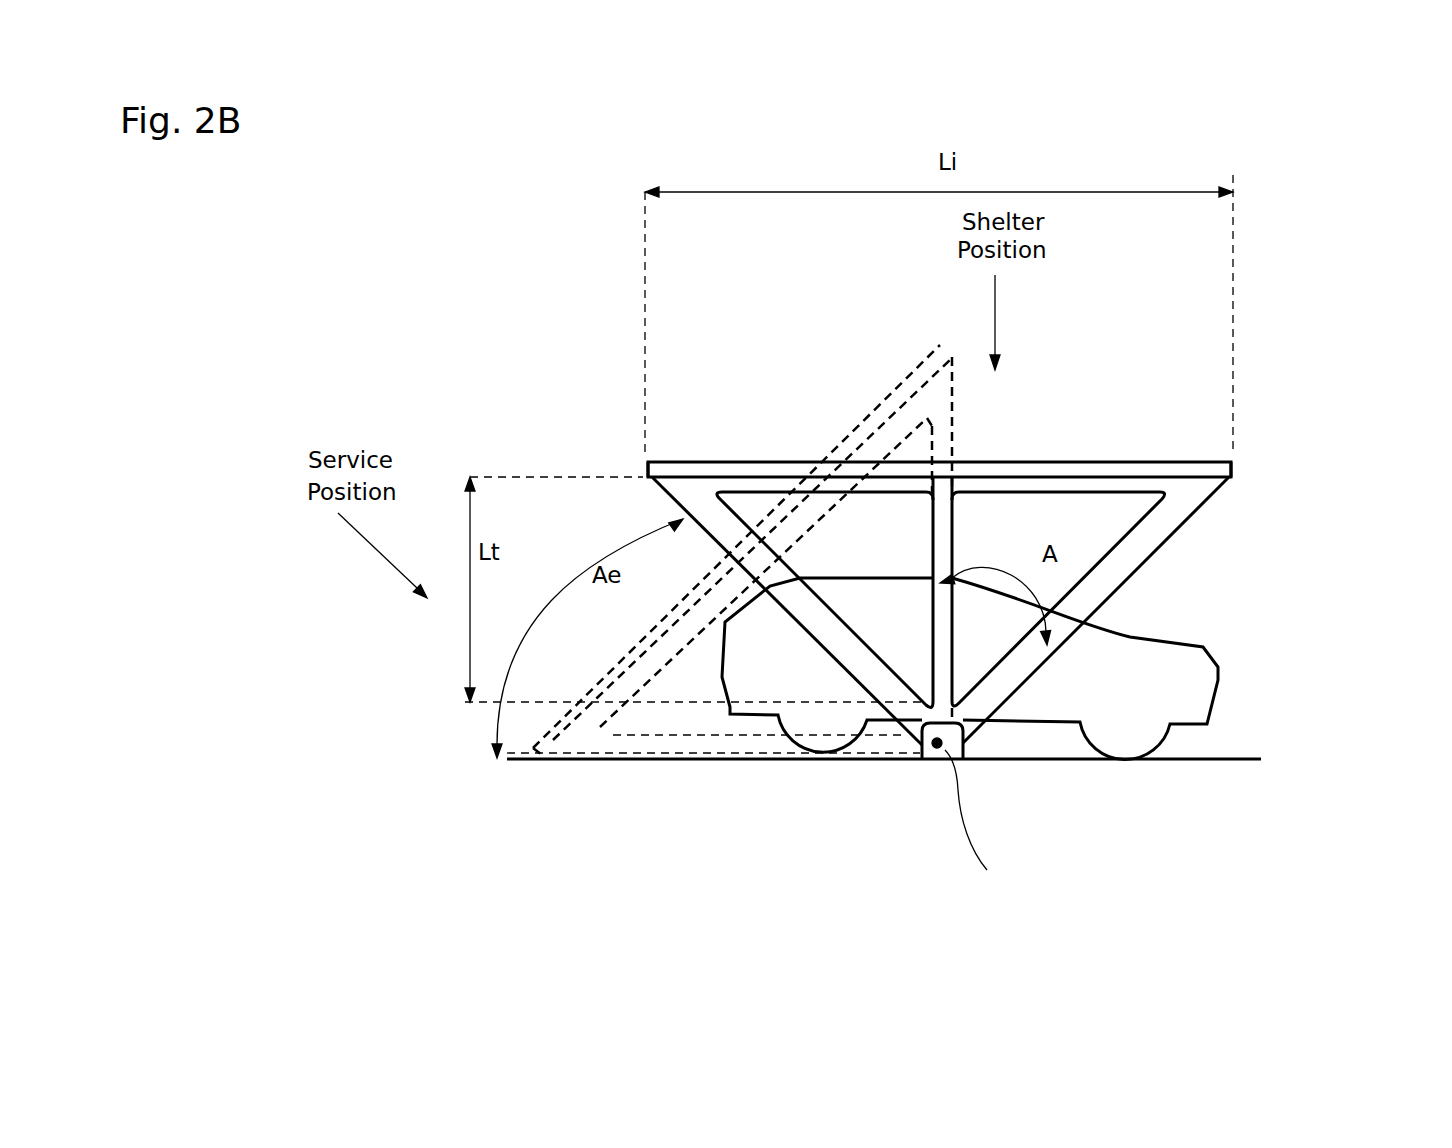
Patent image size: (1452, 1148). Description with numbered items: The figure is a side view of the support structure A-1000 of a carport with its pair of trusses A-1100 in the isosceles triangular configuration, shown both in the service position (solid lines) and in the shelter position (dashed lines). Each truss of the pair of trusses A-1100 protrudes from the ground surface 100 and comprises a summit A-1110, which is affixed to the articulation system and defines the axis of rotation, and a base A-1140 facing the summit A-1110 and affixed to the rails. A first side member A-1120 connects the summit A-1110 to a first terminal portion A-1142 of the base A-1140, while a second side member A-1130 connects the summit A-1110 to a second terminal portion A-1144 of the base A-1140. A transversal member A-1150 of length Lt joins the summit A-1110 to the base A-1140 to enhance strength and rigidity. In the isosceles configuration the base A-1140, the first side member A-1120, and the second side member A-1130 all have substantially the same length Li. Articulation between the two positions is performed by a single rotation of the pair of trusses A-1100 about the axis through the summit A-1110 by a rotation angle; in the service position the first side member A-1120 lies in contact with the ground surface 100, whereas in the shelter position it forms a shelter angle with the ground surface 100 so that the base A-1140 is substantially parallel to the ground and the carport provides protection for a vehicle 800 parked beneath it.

The support structure A-1000 is at (552, 428).
The pair of trusses A-1100 is at (1222, 508).
The summit A-1110 is at (918, 738).
The first side member A-1120 is at (827, 650).
The second side member A-1130 is at (1023, 663).
The base A-1140 is at (995, 450).
The first terminal portion A-1142 is at (645, 475).
The second terminal portion A-1144 is at (1229, 460).
The transversal member A-1150 is at (953, 543).
The vehicle 800 is at (1128, 638).
The ground surface 100 is at (1243, 757).